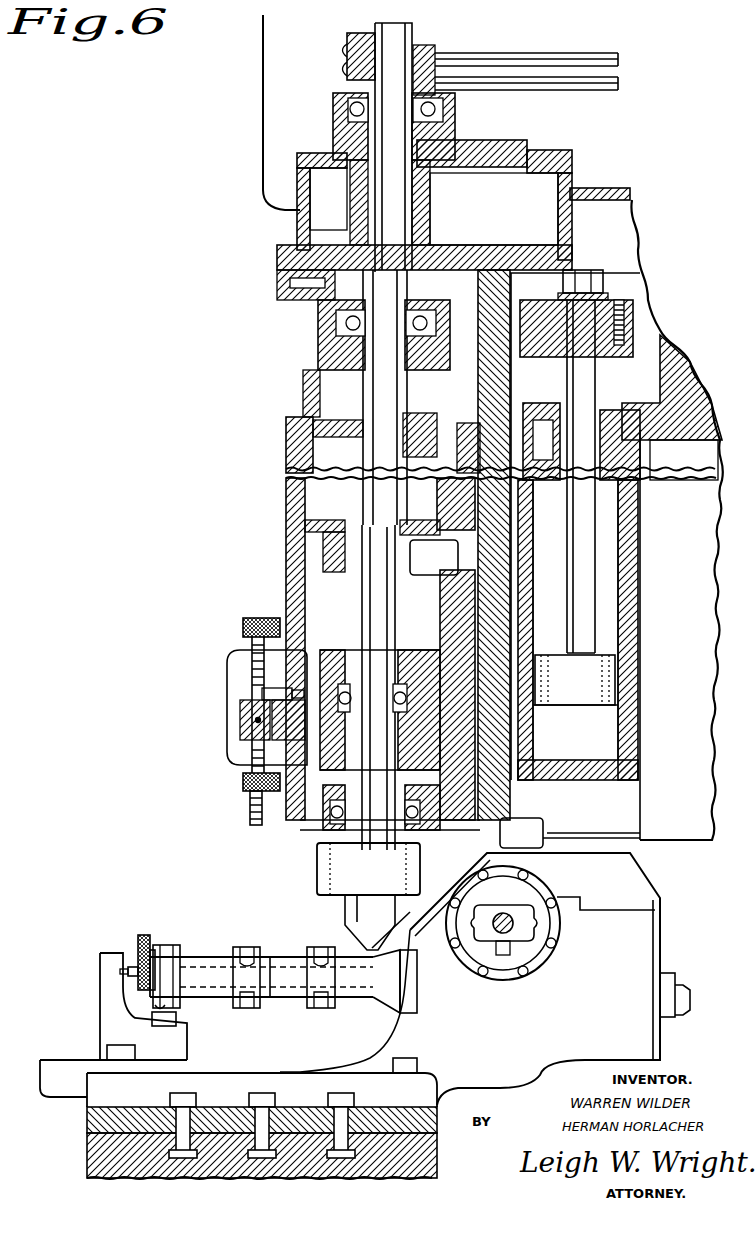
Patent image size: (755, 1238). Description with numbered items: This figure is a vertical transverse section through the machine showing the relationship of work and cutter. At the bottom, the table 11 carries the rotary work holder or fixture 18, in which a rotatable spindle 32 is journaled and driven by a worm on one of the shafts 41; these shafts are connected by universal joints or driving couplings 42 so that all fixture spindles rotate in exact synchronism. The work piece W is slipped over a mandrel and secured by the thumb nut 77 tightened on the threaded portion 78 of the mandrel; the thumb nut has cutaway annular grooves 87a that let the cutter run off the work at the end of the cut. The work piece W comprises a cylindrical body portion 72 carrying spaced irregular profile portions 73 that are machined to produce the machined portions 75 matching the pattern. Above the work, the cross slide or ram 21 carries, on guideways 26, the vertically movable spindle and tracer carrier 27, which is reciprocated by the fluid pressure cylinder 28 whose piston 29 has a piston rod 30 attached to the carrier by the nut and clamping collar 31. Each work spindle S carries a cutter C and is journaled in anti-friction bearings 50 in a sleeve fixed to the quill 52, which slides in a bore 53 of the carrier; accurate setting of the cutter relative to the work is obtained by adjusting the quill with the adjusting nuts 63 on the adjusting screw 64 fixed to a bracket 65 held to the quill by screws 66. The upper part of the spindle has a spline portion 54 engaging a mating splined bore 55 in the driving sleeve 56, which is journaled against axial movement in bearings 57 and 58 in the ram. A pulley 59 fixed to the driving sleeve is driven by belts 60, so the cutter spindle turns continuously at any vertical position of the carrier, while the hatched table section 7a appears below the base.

The splined bore 55 is at (388, 268).
The pulley 59 is at (352, 42).
The belts 60 is at (540, 64).
The bearing 57 is at (443, 111).
The driving sleeve 56 is at (412, 199).
The cross slide or ram 21 is at (603, 193).
The nut and clamping collar 31 is at (610, 280).
The piston rod 30 is at (598, 390).
The piston 29 is at (575, 680).
The fluid pressure cylinder 28 is at (640, 627).
The spindle and tracer carrier 27 is at (286, 452).
The spline portion 54 is at (372, 392).
The bearing 58 is at (435, 331).
The bore 53 is at (440, 586).
The quill 52 is at (445, 613).
The adjusting nuts 63 is at (243, 624).
The adjusting screw 64 is at (250, 800).
The bracket 65 is at (240, 722).
The screws 66 is at (262, 692).
The anti-friction bearings 50 is at (407, 706).
The guideways 26 is at (557, 833).
The work spindle S is at (317, 860).
The cutter C is at (362, 945).
The rotary work holder or fixture 18 is at (470, 979).
The universal joints or driving couplings 42 is at (545, 955).
The shafts 41 is at (514, 930).
The rotatable spindle 32 is at (672, 1015).
The cylindrical body portion 72 is at (202, 1002).
The work piece W is at (193, 957).
The irregular profile portions 73 is at (170, 952).
The machined portions 75 is at (248, 954).
The threaded portion 78 is at (140, 962).
The thumb nut 77 is at (133, 967).
The cutaway annular grooves 87a is at (152, 950).
The table 7a is at (262, 1122).
The table 11 is at (437, 1135).